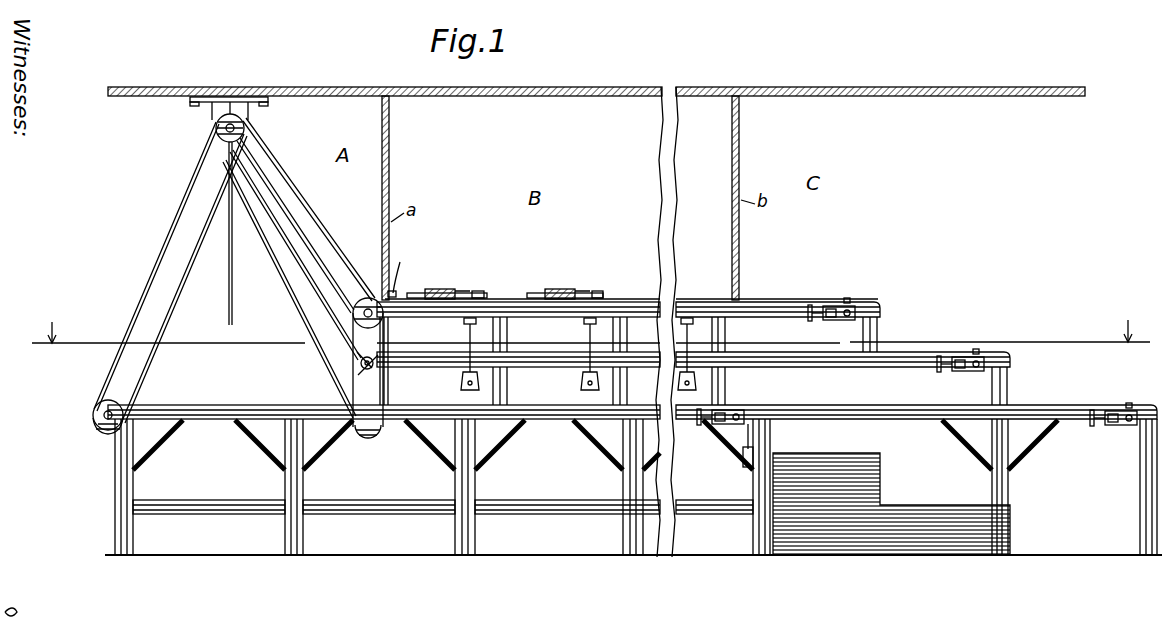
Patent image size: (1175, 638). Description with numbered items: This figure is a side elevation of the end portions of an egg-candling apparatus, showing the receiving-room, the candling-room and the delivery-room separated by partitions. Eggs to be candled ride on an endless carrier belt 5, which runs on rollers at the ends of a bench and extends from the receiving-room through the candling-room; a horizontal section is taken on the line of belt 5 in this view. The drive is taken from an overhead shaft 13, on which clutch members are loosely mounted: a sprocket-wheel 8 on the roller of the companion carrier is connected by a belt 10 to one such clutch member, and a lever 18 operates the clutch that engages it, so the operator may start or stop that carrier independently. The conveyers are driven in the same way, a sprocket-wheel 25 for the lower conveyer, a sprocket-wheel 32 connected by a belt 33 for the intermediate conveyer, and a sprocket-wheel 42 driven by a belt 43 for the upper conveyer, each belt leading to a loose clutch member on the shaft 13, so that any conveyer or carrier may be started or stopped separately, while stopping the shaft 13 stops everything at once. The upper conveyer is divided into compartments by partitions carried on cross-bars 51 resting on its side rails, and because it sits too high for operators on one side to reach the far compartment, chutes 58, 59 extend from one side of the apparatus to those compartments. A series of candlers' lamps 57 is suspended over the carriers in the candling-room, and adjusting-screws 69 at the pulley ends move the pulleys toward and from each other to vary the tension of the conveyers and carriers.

The endless belt 5 is at (587, 337).
The sprocket-wheel 8 is at (101, 428).
The belt 10 is at (140, 301).
The shaft 13 is at (213, 124).
The lever 18 is at (228, 303).
The sprocket-wheel 25 is at (373, 438).
The sprocket-wheel 32 is at (384, 344).
The belt 33 is at (343, 357).
The sprocket-wheel 42 is at (368, 297).
The belt 43 is at (322, 227).
The cross-bars 51 is at (401, 265).
The candlers' lamps 57 is at (480, 384).
The chute 58 is at (413, 291).
The chute 59 is at (438, 291).
The adjusting-screws 69 is at (818, 306).